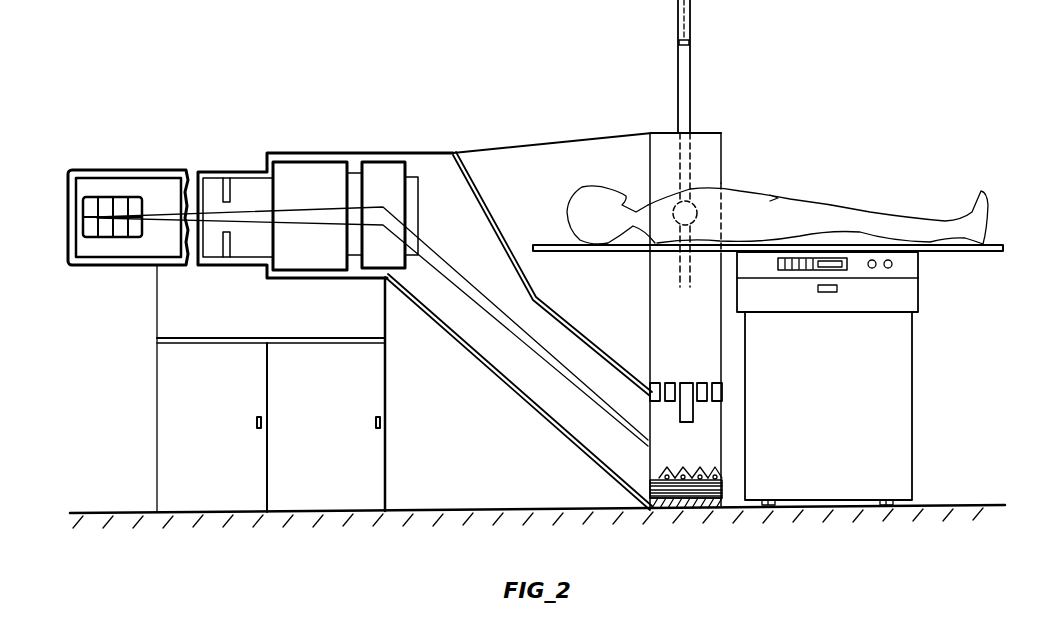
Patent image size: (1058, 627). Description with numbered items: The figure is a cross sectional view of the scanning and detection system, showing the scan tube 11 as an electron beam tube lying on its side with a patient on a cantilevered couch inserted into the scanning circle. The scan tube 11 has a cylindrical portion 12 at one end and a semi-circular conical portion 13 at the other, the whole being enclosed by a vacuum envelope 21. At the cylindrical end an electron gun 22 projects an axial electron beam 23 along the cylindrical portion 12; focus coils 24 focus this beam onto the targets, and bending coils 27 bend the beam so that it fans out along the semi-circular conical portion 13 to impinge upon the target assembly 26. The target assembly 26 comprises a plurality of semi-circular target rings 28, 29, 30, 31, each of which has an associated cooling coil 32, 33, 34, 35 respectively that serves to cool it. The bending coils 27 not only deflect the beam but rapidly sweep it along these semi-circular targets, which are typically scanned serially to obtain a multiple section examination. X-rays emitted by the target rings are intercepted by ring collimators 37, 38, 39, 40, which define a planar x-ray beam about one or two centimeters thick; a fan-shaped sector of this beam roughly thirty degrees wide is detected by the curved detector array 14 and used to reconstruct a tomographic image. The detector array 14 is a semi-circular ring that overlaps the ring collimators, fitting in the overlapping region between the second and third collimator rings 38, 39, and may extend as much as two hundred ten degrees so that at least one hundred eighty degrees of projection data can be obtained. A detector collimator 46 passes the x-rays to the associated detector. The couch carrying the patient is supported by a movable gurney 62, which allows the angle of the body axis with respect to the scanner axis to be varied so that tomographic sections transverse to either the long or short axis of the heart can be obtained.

The scan tube 11 is at (730, 155).
The cylindrical portion 12 is at (170, 170).
The semi-circular conical portion 13 is at (543, 163).
The detector array 14 is at (676, 31).
The vacuum envelope 21 is at (495, 360).
The electron gun 22 is at (110, 237).
The electron beam 23 is at (253, 207).
The focus coils 24 is at (313, 175).
The target assembly 26 is at (637, 473).
The bending coils 27 is at (387, 177).
The semi-circular target ring 28 is at (655, 472).
The semi-circular target ring 29 is at (680, 477).
The semi-circular target ring 30 is at (697, 477).
The semi-circular target ring 31 is at (710, 467).
The cooling coil 32 is at (657, 510).
The cooling coil 33 is at (680, 510).
The cooling coil 34 is at (700, 510).
The cooling coil 35 is at (722, 510).
The ring collimator 37 is at (650, 383).
The ring collimator 38 is at (672, 383).
The ring collimator 39 is at (703, 383).
The ring collimator 40 is at (720, 392).
The detector collimator 46 is at (685, 43).
The movable gurney 62 is at (912, 347).